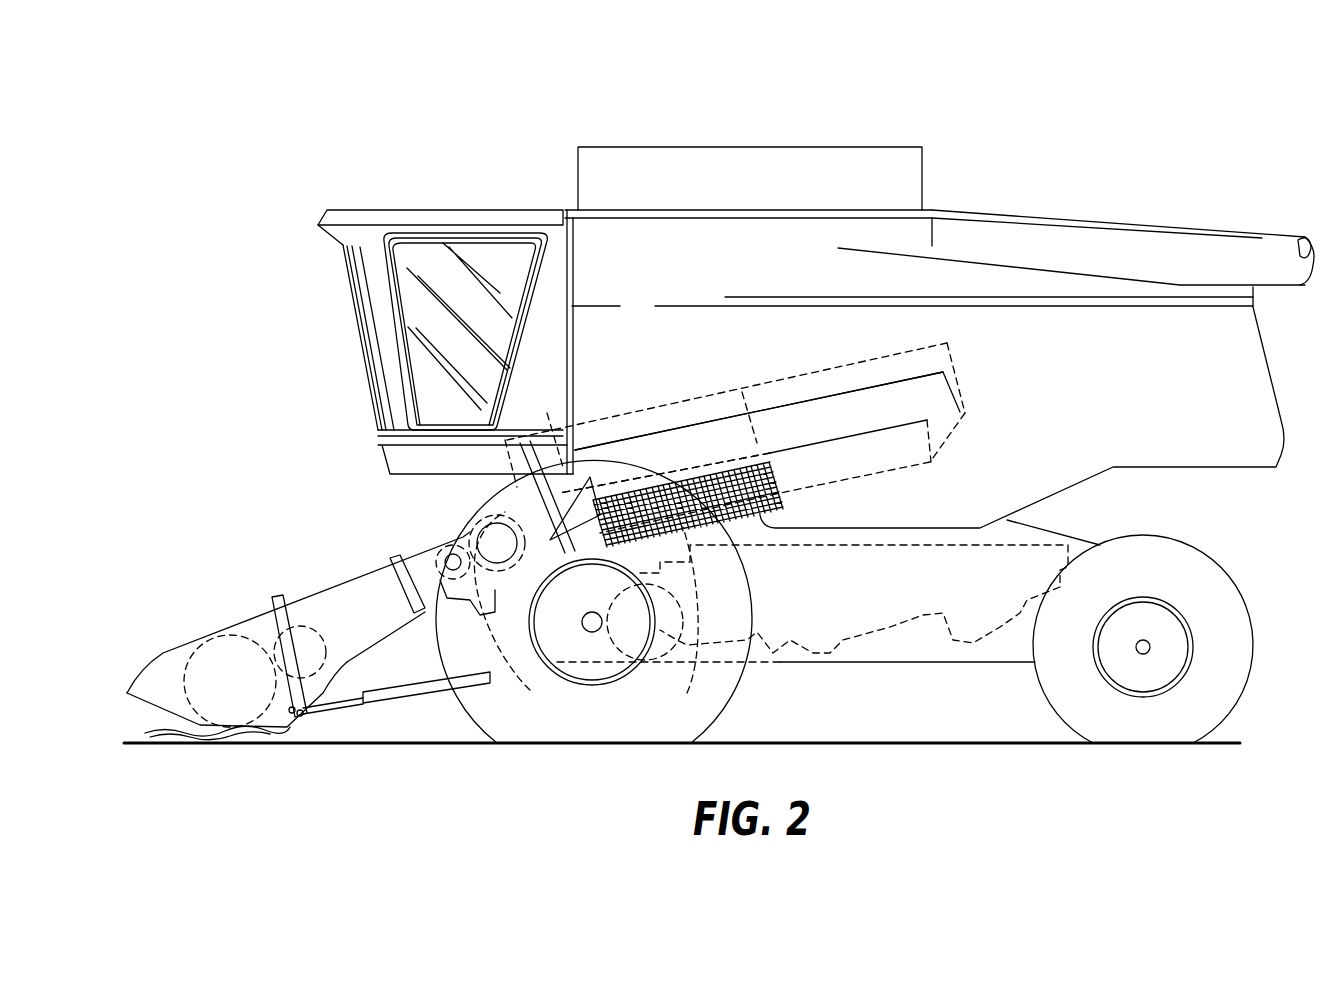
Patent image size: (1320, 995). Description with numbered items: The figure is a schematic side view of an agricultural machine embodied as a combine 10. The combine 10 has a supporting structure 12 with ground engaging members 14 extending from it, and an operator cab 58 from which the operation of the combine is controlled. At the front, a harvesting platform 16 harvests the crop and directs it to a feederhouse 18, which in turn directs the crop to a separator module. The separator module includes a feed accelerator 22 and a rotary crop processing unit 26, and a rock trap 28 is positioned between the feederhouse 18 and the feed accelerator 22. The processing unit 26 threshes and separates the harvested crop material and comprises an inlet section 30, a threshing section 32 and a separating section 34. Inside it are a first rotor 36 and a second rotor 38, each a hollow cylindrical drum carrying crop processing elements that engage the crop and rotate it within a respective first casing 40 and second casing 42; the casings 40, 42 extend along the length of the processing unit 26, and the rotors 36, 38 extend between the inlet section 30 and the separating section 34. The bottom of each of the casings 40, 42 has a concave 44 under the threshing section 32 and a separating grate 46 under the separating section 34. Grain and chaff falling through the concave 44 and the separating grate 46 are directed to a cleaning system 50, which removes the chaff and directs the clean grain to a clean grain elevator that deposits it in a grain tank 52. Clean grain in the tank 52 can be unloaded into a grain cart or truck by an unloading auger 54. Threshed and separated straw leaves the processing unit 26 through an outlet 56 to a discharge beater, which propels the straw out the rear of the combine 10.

The combine 10 is at (1070, 95).
The supporting structure 12 is at (1048, 527).
The ground engaging members 14 is at (722, 700).
The harvesting platform 16 is at (162, 658).
The feederhouse 18 is at (327, 590).
The feed accelerator 22 is at (462, 538).
The rotary crop processing unit 26 is at (997, 370).
The rock trap 28 is at (517, 616).
The inlet section 30 is at (505, 440).
The threshing section 32 is at (580, 420).
The separating section 34 is at (663, 303).
The first rotor 36 is at (783, 377).
The second rotor 38 is at (759, 411).
The first casing 40 is at (610, 417).
The second casing 42 is at (665, 473).
The concave 44 is at (652, 628).
The separating grate 46 is at (877, 483).
The cleaning system 50 is at (897, 633).
The grain tank 52 is at (602, 278).
The unloading auger 54 is at (1133, 281).
The outlet 56 is at (975, 443).
The operator cab 58 is at (496, 278).